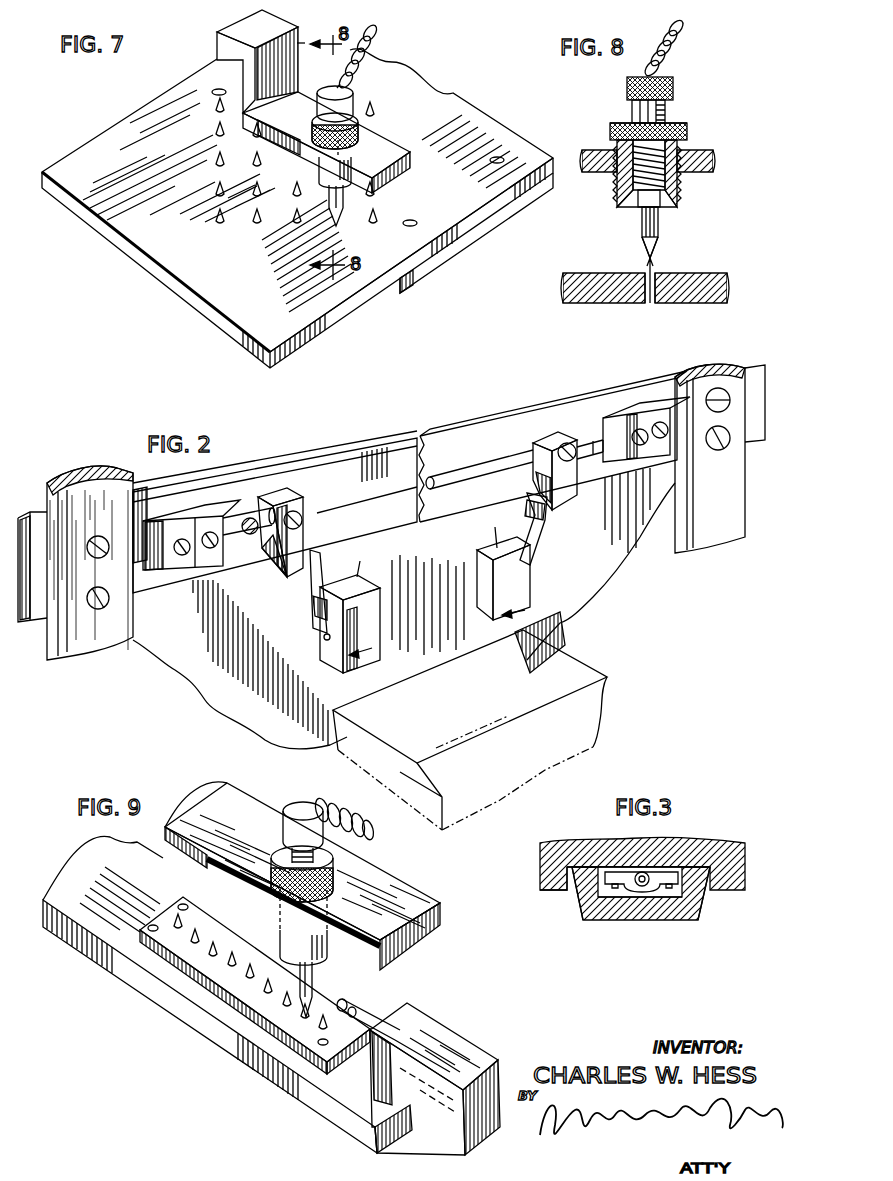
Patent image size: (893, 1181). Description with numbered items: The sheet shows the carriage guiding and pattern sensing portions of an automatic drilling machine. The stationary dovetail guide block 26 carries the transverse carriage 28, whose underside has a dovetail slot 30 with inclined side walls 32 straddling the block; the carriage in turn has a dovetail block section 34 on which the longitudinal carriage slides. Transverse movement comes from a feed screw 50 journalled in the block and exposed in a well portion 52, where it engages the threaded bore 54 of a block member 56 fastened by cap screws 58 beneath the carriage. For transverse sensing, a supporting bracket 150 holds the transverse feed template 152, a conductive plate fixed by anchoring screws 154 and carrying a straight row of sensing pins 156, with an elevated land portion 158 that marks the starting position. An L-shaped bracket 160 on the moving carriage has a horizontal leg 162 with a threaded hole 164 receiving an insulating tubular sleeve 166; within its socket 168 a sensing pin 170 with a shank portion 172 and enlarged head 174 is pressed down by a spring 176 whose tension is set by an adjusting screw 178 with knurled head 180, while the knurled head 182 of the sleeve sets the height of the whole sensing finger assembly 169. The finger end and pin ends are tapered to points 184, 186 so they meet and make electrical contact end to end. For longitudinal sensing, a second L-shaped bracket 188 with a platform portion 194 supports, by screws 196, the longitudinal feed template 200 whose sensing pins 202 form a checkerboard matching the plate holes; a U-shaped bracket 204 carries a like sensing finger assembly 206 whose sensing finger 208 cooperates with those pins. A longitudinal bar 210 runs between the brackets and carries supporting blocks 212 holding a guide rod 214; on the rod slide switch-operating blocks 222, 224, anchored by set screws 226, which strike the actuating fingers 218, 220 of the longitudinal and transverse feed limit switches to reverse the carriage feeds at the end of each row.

In FIG. 2, the dovetail guide block 26 is at (577, 670).
In FIG. 3, the dovetail guide block 26 is at (690, 923).
In FIG. 2, the transverse carriage 28 is at (595, 577).
In FIG. 3, the transverse carriage 28 is at (548, 855).
In FIG. 3, the dovetail slot 30 is at (583, 866).
In FIG. 3, the inclined side walls 32 is at (560, 890).
In FIG. 3, the dovetail block section 34 is at (578, 913).
In FIG. 3, the transverse feed screw 50 is at (655, 870).
In FIG. 3, the socket or well portion 52 is at (612, 895).
In FIG. 3, the threaded bore 54 is at (642, 887).
In FIG. 3, the block member 56 is at (670, 870).
In FIG. 3, the cap screws 58 is at (682, 890).
In FIG. 9, the supporting bracket 150 is at (73, 893).
In FIG. 8, the transverse feed template 152 is at (680, 297).
In FIG. 9, the transverse feed template 152 is at (170, 940).
In FIG. 9, the anchoring screws 154 is at (147, 940).
In FIG. 8, the sensing pins 156 is at (658, 280).
In FIG. 9, the sensing pins 156 is at (247, 978).
In FIG. 9, the elevated land portion 158 is at (333, 1100).
In FIG. 8, the L-shaped bracket 160 is at (705, 152).
In FIG. 2, the L-shaped bracket 160 is at (717, 377).
In FIG. 9, the L-shaped bracket 160 is at (400, 877).
In FIG. 9, the horizontal leg 162 is at (210, 810).
In FIG. 8, the threaded hole 164 is at (617, 175).
In FIG. 9, the tubular sleeve 166 is at (292, 930).
In FIG. 8, the socket 168 is at (627, 137).
In FIG. 8, the sensing finger assembly 169 is at (682, 118).
In FIG. 9, the sensing finger assembly 169 is at (288, 798).
In FIG. 8, the sensing pin 170 is at (663, 217).
In FIG. 9, the sensing pin 170 is at (313, 978).
In FIG. 8, the shank portion 172 is at (645, 218).
In FIG. 8, the enlarged head 174 is at (678, 183).
In FIG. 8, the spring 176 is at (620, 143).
In FIG. 8, the adjusting screw 178 is at (638, 113).
In FIG. 8, the knurled head 180 is at (673, 85).
In FIG. 8, the knurled head 182 is at (685, 128).
In FIG. 8, the tapered point 184 is at (657, 243).
In FIG. 8, the tapered point 186 is at (648, 268).
In FIG. 7, the second L-shaped bracket 188 is at (497, 230).
In FIG. 7, the platform portion 194 is at (430, 267).
In FIG. 7, the screws 196 is at (301, 48).
In FIG. 7, the longitudinal feed template 200 is at (248, 312).
In FIG. 7, the sensing pins 202 is at (219, 102).
In FIG. 7, the U-shaped bracket 204 is at (240, 37).
In FIG. 2, the U-shaped bracket 204 is at (100, 640).
In FIG. 7, the sensing finger assembly 206 is at (362, 90).
In FIG. 7, the sensing finger 208 is at (343, 202).
In FIG. 2, the longitudinal bar 210 is at (481, 418).
In FIG. 2, the supporting blocks 212 is at (177, 520).
In FIG. 2, the guide rod 214 is at (387, 490).
In FIG. 2, the actuating finger 218 is at (310, 580).
In FIG. 2, the actuating finger 220 is at (547, 522).
In FIG. 2, the switch-operating block 222 is at (277, 492).
In FIG. 2, the switch-operating block 224 is at (557, 432).
In FIG. 2, the set screws 226 is at (304, 515).